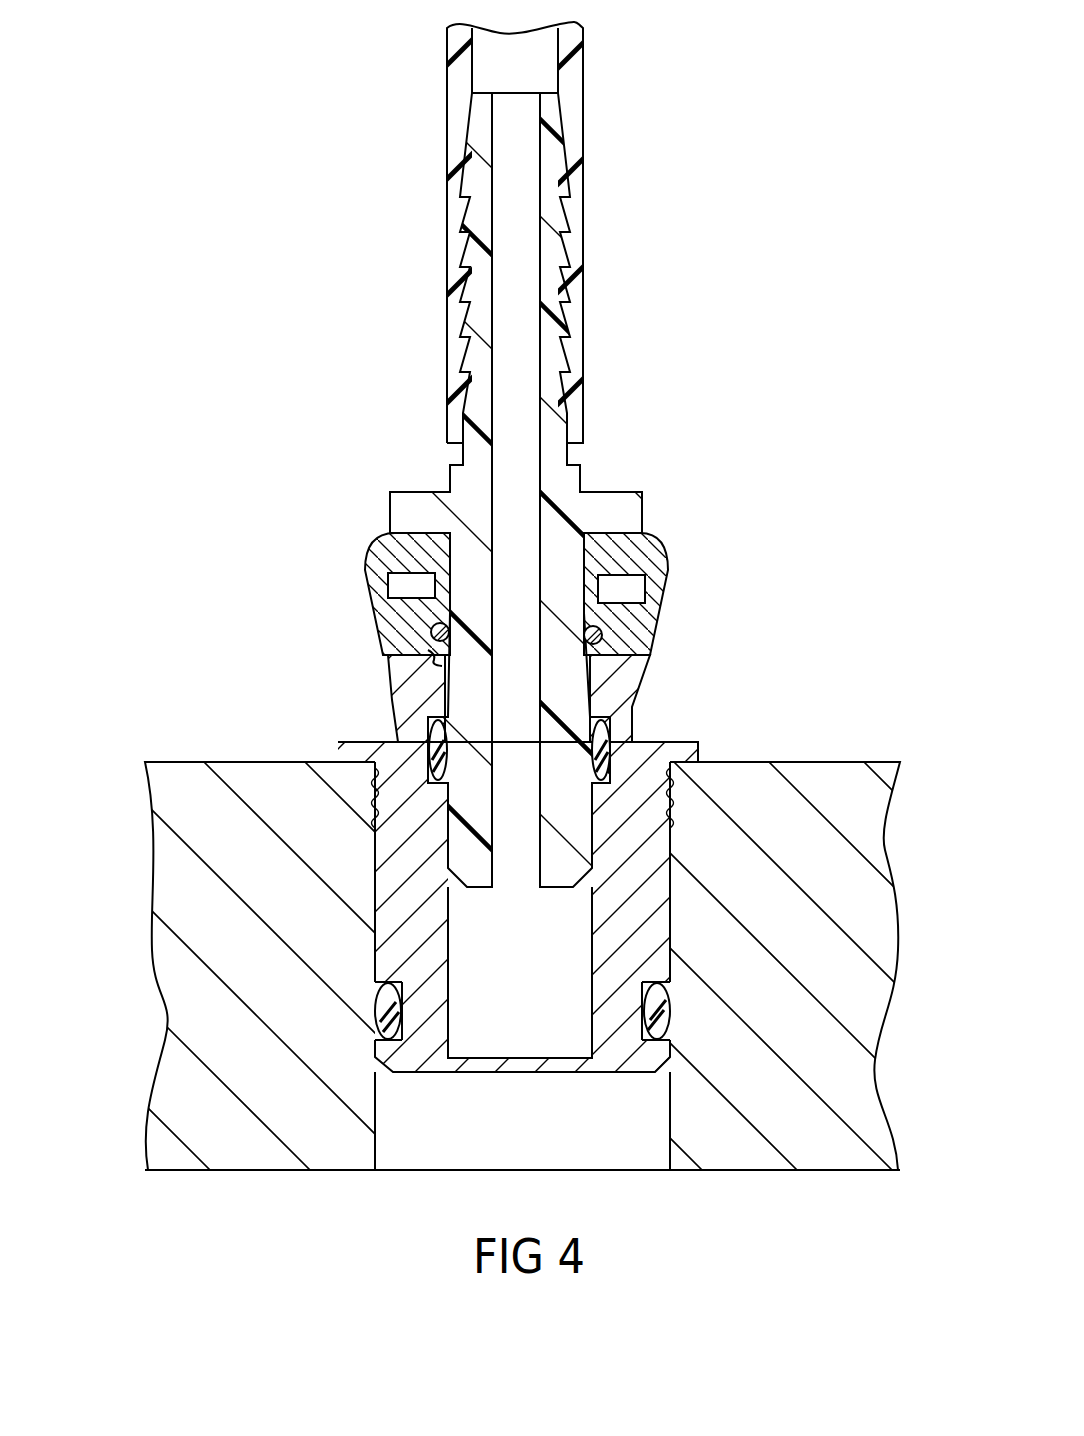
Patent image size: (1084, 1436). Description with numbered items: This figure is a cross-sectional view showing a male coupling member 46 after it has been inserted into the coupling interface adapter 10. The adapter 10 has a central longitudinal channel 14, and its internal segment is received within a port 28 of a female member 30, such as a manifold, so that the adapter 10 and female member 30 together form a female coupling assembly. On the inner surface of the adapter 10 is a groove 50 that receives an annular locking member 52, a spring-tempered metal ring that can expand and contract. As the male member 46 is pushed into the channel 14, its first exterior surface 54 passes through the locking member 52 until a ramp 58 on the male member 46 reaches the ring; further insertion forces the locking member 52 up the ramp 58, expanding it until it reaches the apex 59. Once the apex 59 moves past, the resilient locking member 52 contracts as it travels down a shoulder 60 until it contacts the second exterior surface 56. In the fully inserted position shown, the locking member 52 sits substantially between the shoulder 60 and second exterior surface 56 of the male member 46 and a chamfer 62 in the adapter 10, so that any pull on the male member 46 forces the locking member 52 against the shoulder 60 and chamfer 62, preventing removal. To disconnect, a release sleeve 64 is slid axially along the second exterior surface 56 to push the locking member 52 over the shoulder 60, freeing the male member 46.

The coupling interface adapter 10 is at (338, 752).
The central longitudinal channel 14 is at (536, 970).
The port 28 is at (540, 1131).
The female member 30 is at (818, 762).
The male coupling member 46 is at (612, 500).
The groove 50 is at (431, 632).
The annular locking member 52 is at (600, 642).
The first exterior surface 54 is at (622, 712).
The second exterior surface 56 is at (645, 545).
The ramp 58 is at (405, 690).
The apex 59 is at (428, 657).
The shoulder 60 is at (412, 586).
The chamfer 62 is at (612, 628).
The release sleeve 64 is at (405, 572).